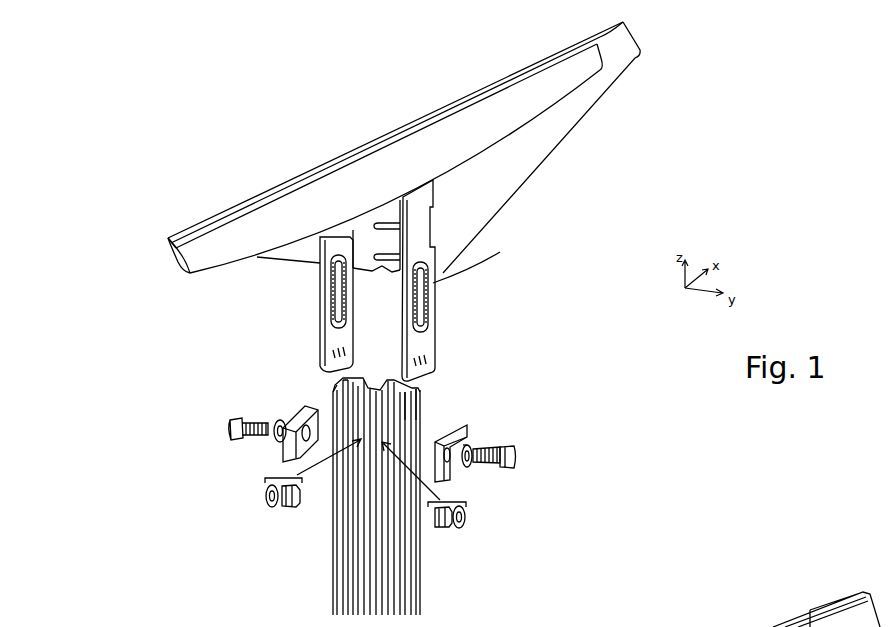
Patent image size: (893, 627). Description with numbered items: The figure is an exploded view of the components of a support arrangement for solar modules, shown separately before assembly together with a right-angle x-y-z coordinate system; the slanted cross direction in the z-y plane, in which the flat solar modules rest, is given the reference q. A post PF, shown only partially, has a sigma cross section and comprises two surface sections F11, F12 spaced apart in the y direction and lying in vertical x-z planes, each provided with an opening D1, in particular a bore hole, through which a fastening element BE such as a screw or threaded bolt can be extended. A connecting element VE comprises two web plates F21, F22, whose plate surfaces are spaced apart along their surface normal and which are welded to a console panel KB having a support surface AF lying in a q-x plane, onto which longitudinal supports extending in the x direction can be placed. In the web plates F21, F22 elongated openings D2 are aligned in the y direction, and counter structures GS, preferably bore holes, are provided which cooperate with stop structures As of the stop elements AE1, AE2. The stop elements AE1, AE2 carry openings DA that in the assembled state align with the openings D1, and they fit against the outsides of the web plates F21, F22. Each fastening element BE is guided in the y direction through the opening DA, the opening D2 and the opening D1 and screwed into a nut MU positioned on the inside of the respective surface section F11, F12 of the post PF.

The support surface AF is at (555, 49).
The connecting element VE is at (222, 154).
The cross direction q is at (144, 248).
The console panel KB is at (510, 165).
The counter structure GS is at (433, 283).
The opening D2 is at (433, 303).
The web plate F22 is at (330, 346).
The web plate F21 is at (430, 336).
The surface section F12 is at (337, 383).
The surface section F11 is at (418, 410).
The opening D1 is at (413, 457).
The stop structure As is at (472, 445).
The fastening element BE is at (507, 452).
The opening DA is at (471, 467).
The stop element AE1 is at (458, 475).
The stop element AE2 is at (287, 458).
The nut MU is at (440, 523).
The post PF is at (287, 553).